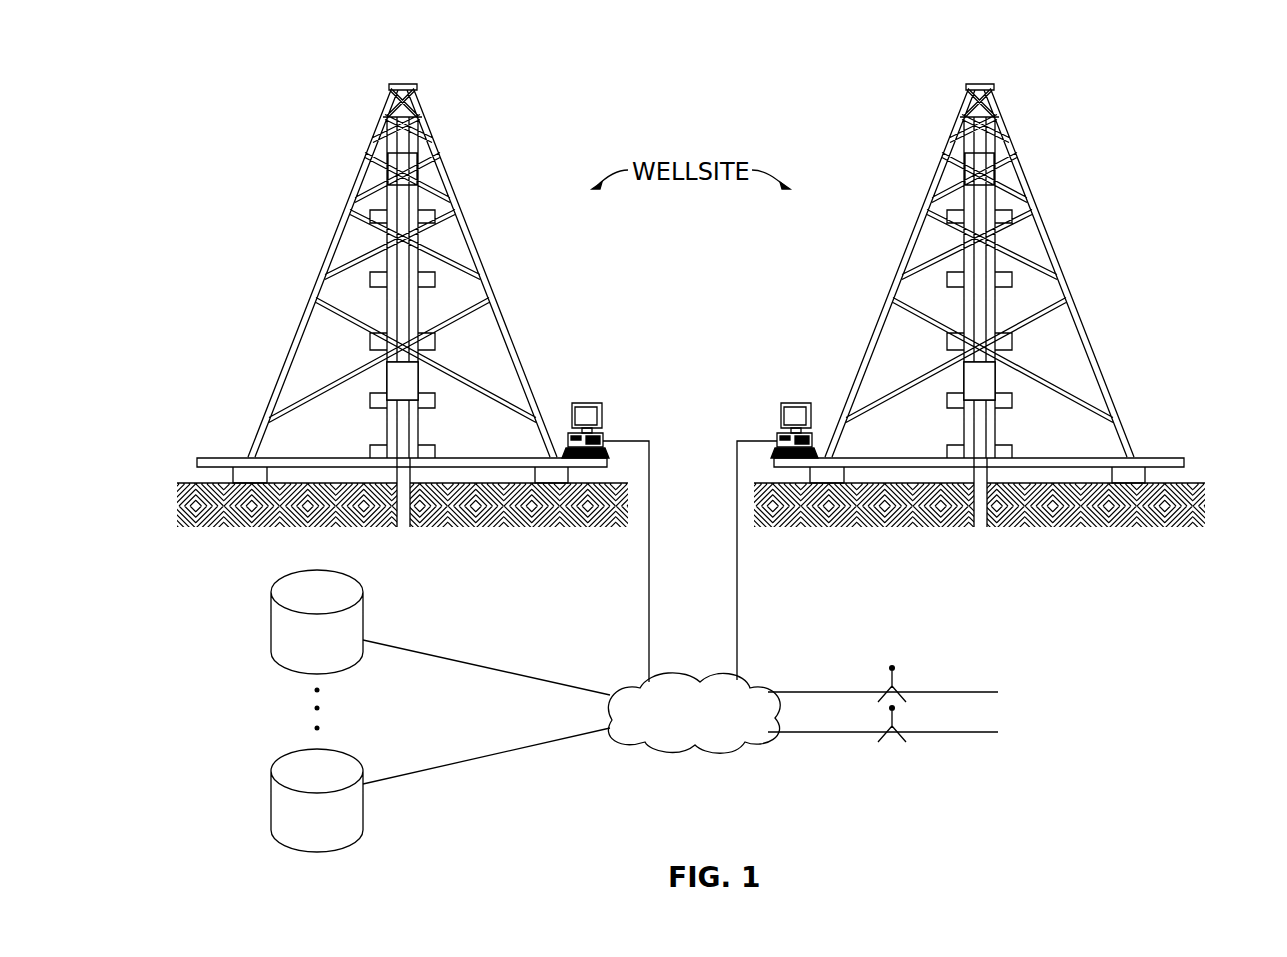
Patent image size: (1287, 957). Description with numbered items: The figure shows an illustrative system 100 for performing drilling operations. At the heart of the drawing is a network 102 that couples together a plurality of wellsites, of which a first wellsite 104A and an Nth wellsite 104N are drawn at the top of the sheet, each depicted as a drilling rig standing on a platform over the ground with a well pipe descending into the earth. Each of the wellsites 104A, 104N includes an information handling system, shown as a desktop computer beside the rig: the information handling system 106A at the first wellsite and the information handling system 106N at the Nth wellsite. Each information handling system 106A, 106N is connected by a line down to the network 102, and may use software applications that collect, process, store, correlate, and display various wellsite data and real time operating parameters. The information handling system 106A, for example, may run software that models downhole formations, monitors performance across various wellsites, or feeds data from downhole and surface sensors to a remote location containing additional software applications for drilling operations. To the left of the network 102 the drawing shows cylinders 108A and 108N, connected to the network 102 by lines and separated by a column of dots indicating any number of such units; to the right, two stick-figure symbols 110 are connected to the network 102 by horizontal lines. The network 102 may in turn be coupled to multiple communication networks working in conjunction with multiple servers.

The system 100 is at (1143, 83).
The network 102 is at (633, 683).
The wellsite 104A is at (331, 233).
The wellsite 104N is at (1053, 234).
The information handling system 106A is at (590, 403).
The information handling system 106N is at (794, 403).
The database 108A is at (281, 577).
The database 108N is at (281, 757).
The user 110 is at (955, 692).